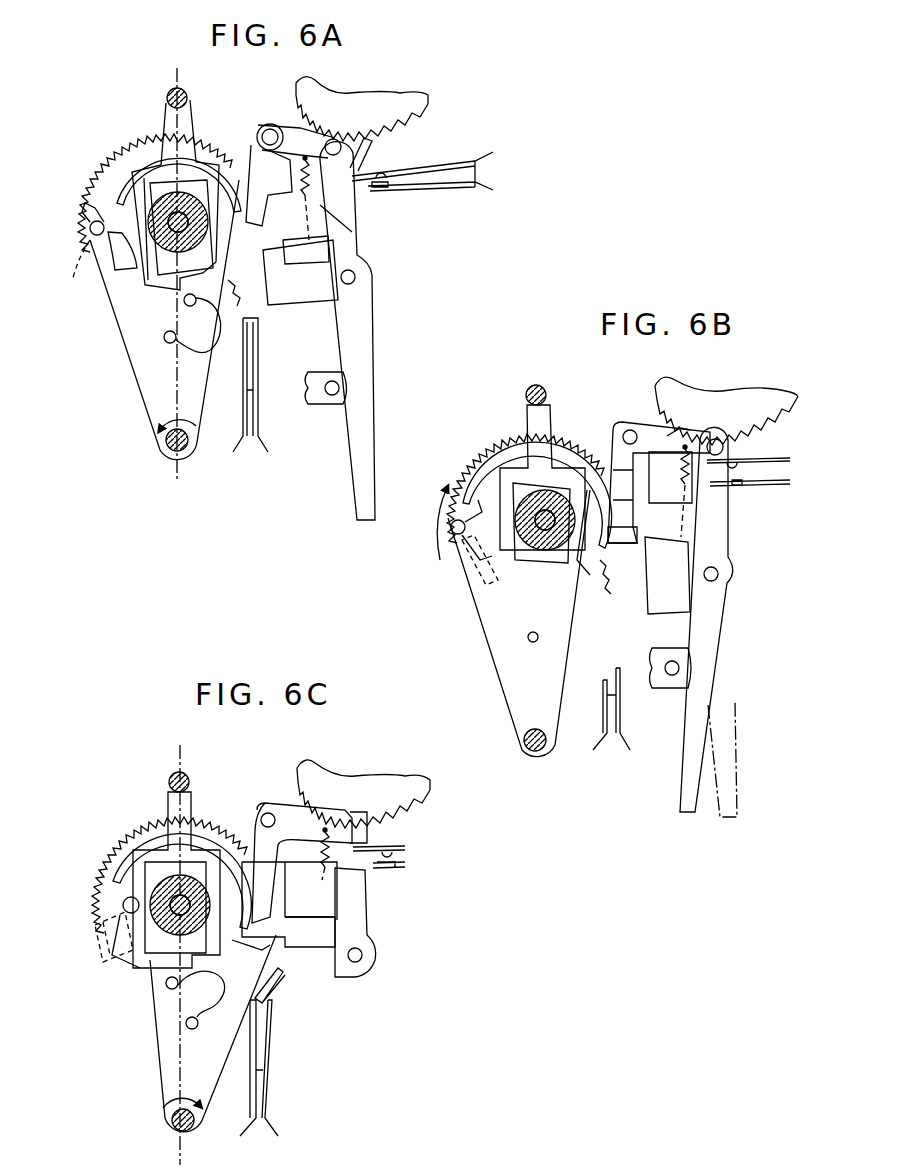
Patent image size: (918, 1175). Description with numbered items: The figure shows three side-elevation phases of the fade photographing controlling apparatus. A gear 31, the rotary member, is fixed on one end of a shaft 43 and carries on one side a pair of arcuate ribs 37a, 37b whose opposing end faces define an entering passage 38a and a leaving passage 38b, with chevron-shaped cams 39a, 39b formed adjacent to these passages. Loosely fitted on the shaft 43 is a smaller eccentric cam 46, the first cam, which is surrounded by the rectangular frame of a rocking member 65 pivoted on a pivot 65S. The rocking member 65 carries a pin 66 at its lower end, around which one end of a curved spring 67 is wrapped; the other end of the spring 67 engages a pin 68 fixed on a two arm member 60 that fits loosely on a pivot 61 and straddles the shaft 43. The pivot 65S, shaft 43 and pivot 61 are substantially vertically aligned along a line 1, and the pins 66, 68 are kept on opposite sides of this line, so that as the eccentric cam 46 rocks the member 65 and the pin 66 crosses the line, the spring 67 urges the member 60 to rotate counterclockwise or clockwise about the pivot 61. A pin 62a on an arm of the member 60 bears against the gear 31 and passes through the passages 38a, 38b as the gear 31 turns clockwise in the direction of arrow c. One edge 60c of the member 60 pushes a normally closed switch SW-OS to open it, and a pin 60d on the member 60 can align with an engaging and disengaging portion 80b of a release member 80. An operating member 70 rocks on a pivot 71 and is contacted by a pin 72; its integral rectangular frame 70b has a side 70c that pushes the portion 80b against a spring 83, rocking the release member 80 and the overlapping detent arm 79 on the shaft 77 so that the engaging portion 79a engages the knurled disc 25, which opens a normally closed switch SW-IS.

In FIG. 6A, the center line 1 is at (180, 82).
In FIG. 6C, the center line 1 is at (178, 766).
In FIG. 6A, the disc 25 is at (380, 96).
In FIG. 6B, the disc 25 is at (726, 411).
In FIG. 6C, the disc 25 is at (367, 793).
In FIG. 6A, the gear (rotary member) 31 is at (128, 150).
In FIG. 6B, the gear (rotary member) 31 is at (512, 440).
In FIG. 6C, the gear (rotary member) 31 is at (169, 875).
In FIG. 6B, the arcuate rib 37a is at (472, 570).
In FIG. 6C, the arcuate rib 37a is at (128, 865).
In FIG. 6A, the arcuate rib 37b is at (90, 227).
In FIG. 6B, the arcuate rib 37b is at (492, 482).
In FIG. 6C, the arcuate rib 37b is at (140, 975).
In FIG. 6C, the entering passage 38a is at (108, 892).
In FIG. 6A, the leaving passage 38b is at (115, 200).
In FIG. 6B, the leaving passage 38b is at (495, 572).
In FIG. 6C, the leaving passage 38b is at (250, 964).
In FIG. 6C, the chevron-shaped cam 39a is at (118, 950).
In FIG. 6C, the chevron-shaped cam 39b is at (350, 903).
In FIG. 6C, the shaft 43 is at (167, 875).
In FIG. 6A, the eccentric cam (first cam) 46 is at (168, 180).
In FIG. 6B, the eccentric cam (first cam) 46 is at (550, 552).
In FIG. 6C, the eccentric cam (first cam) 46 is at (197, 875).
In FIG. 6A, the two arm member 60 is at (130, 340).
In FIG. 6B, the two arm member 60 is at (500, 674).
In FIG. 6C, the two arm member 60 is at (160, 1076).
In FIG. 6C, the edge of two arm member 60c is at (280, 1000).
In FIG. 6B, the pin 60d is at (592, 580).
In FIG. 6C, the pin 60d is at (310, 934).
In FIG. 6A, the pivot 61 is at (185, 452).
In FIG. 6B, the pivot 61 is at (523, 741).
In FIG. 6C, the pivot 61 is at (168, 1122).
In FIG. 6A, the pin 62a is at (77, 274).
In FIG. 6B, the pin 62a is at (460, 563).
In FIG. 6C, the pin 62a is at (91, 937).
In FIG. 6A, the rocking member 65 is at (168, 115).
In FIG. 6B, the rocking member 65 is at (542, 484).
In FIG. 6C, the rocking member 65 is at (150, 963).
In FIG. 6A, the pivot 65S is at (188, 98).
In FIG. 6B, the pivot 65S is at (547, 395).
In FIG. 6C, the pivot 65S is at (190, 778).
In FIG. 6A, the pin 66 is at (183, 301).
In FIG. 6C, the pin 66 is at (172, 991).
In FIG. 6A, the curved spring 67 is at (218, 352).
In FIG. 6C, the curved spring 67 is at (206, 1006).
In FIG. 6A, the pin 68 is at (170, 344).
In FIG. 6C, the pin 68 is at (193, 1030).
In FIG. 6A, the operating member 70 is at (372, 316).
In FIG. 6B, the operating member 70 is at (728, 594).
In FIG. 6C, the operating member 70 is at (377, 922).
In FIG. 6A, the rectangular frame 70b is at (276, 284).
In FIG. 6B, the rectangular frame 70b is at (652, 546).
In FIG. 6B, the side of rectangular frame 70c is at (600, 468).
In FIG. 6A, the pivot 71 is at (356, 277).
In FIG. 6B, the pivot 71 is at (720, 574).
In FIG. 6A, the pin 72 is at (328, 398).
In FIG. 6B, the pin 72 is at (671, 668).
In FIG. 6B, the shaft 77 is at (630, 422).
In FIG. 6B, the detent arm 79 is at (652, 424).
In FIG. 6A, the engaging portion 79a is at (352, 144).
In FIG. 6B, the engaging portion 79a is at (728, 447).
In FIG. 6A, the release member 80 is at (253, 160).
In FIG. 6B, the release member 80 is at (623, 485).
In FIG. 6C, the release member 80 is at (286, 812).
In FIG. 6A, the engaging and disengaging portion 80b is at (306, 262).
In FIG. 6B, the engaging and disengaging portion 80b is at (622, 568).
In FIG. 6C, the engaging and disengaging portion 80b is at (289, 904).
In FIG. 6A, the spring 83 is at (322, 197).
In FIG. 6B, the spring 83 is at (670, 491).
In FIG. 6C, the spring 83 is at (325, 854).
In FIG. 6A, the normally closed switch SW-IS is at (393, 197).
In FIG. 6B, the normally closed switch SW-IS is at (744, 498).
In FIG. 6C, the normally closed switch SW-IS is at (371, 873).
In FIG. 6A, the normally closed switch SW-OS is at (256, 455).
In FIG. 6B, the normally closed switch SW-OS is at (611, 709).
In FIG. 6C, the normally closed switch SW-OS is at (281, 1034).
In FIG. 6B, the arrow c is at (615, 539).